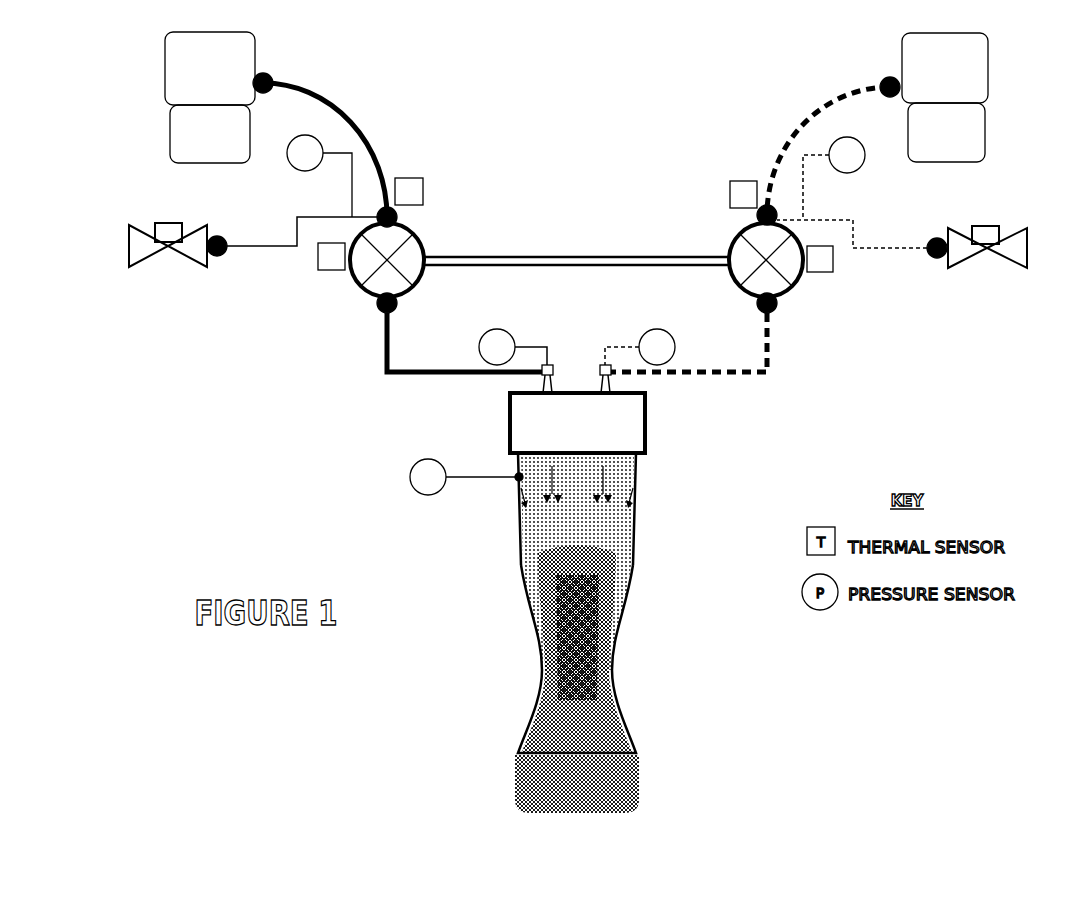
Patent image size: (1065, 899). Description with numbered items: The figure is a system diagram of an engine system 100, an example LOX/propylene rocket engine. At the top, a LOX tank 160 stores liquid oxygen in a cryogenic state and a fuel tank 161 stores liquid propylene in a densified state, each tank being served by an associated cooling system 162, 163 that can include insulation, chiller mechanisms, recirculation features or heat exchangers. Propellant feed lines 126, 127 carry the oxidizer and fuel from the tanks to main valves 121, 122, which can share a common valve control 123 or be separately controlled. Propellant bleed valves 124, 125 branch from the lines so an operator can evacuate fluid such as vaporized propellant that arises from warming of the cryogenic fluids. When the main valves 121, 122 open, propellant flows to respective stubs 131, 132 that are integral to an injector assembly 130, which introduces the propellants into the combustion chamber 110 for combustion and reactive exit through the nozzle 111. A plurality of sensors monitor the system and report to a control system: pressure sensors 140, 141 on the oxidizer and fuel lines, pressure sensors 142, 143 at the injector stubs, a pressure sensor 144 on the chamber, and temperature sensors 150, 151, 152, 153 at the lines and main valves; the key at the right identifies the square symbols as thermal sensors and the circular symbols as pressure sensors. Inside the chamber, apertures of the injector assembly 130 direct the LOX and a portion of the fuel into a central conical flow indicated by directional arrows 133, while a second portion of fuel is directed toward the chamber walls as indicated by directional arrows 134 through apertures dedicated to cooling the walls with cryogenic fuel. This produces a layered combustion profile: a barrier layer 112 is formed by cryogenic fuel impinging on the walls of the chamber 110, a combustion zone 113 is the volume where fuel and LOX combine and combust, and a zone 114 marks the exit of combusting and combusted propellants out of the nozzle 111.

The engine system 100 is at (117, 56).
The combustion chamber 110 is at (516, 565).
The nozzle 111 is at (540, 677).
The barrier layer 112 is at (638, 549).
The combustion zone 113 is at (624, 579).
The zone 114 is at (600, 612).
The main valve 121 is at (363, 289).
The main valve 122 is at (790, 287).
The valve control 123 is at (642, 250).
The propellant bleed valve 124 is at (198, 268).
The propellant bleed valve 125 is at (963, 270).
The propellant feed line 126 is at (366, 140).
The propellant feed line 127 is at (795, 134).
The injector assembly 130 is at (563, 446).
The stub 131 is at (536, 383).
The stub 132 is at (619, 383).
The directional arrows 133 is at (578, 493).
The directional arrows 134 is at (579, 513).
The pressure sensor 140 is at (292, 165).
The pressure sensor 141 is at (861, 166).
The pressure sensor 142 is at (479, 350).
The pressure sensor 143 is at (676, 347).
The pressure sensor 144 is at (410, 480).
The temperature sensor 150 is at (318, 269).
The temperature sensor 151 is at (423, 201).
The temperature sensor 152 is at (730, 201).
The temperature sensor 153 is at (833, 268).
The LOX tank 160 is at (198, 98).
The fuel tank 161 is at (933, 98).
The cooling system 162 is at (198, 158).
The cooling system 163 is at (934, 158).